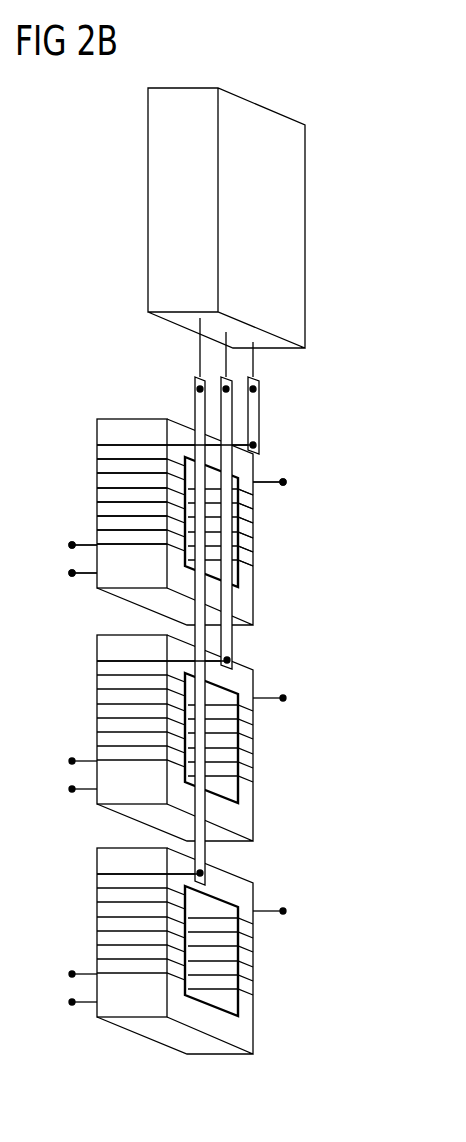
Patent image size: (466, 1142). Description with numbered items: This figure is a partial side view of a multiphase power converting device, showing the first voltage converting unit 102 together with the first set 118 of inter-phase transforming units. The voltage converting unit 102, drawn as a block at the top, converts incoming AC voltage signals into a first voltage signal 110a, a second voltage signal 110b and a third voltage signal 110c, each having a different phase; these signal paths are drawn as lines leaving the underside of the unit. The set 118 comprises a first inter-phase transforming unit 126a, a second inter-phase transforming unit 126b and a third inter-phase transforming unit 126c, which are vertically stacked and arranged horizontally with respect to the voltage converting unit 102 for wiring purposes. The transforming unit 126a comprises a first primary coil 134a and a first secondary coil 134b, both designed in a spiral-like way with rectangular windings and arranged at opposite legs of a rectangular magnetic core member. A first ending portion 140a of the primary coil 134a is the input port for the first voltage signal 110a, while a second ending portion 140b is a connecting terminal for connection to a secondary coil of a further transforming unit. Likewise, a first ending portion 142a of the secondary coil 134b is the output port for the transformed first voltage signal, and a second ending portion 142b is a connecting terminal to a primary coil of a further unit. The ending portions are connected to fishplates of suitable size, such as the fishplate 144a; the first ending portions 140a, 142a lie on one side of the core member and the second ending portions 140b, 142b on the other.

The voltage converting unit 102 is at (148, 198).
The set of inter-phase transforming units 118 is at (352, 373).
The first voltage signal 110a is at (253, 363).
The second voltage signal 110b is at (226, 359).
The third voltage signal 110c is at (200, 357).
The fishplate 144a is at (259, 417).
The first inter-phase transforming unit 126a is at (209, 507).
The second inter-phase transforming unit 126b is at (267, 752).
The third inter-phase transforming unit 126c is at (267, 956).
The first primary coil 134a is at (97, 467).
The first secondary coil 134b is at (255, 588).
The first ending portion of the primary coil 140a is at (131, 445).
The second ending portion of the primary coil 140b is at (73, 543).
The first ending portion of the secondary coil 142a is at (271, 485).
The second ending portion of the secondary coil 142b is at (82, 577).